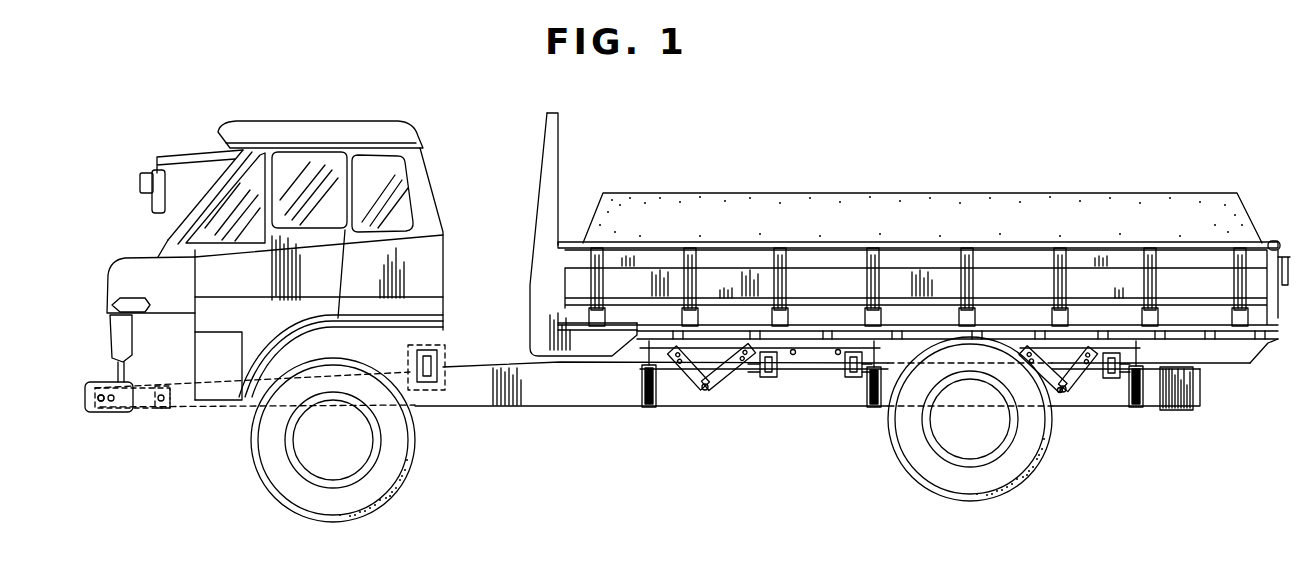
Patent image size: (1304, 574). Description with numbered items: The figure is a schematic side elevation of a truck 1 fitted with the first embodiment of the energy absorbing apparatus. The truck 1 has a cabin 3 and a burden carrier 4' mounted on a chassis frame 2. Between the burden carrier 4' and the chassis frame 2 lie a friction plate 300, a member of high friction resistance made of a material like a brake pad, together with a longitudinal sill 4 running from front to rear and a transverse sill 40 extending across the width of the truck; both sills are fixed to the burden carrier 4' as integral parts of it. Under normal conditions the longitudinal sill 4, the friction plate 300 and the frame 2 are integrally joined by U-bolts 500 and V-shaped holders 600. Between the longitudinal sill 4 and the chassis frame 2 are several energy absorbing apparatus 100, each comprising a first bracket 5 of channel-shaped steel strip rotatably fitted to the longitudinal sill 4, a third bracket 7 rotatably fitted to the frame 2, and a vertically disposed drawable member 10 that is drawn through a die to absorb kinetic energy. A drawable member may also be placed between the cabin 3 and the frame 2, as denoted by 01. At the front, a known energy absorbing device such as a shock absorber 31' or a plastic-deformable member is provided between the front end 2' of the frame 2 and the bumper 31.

The truck 1 is at (674, 291).
The chassis frame 2 is at (672, 388).
The front end of the frame 2' is at (168, 424).
The cabin 3 is at (332, 123).
The longitudinal sill 4 is at (910, 261).
The burden carrier 4' is at (922, 214).
The first bracket 5 is at (793, 355).
The third bracket 7 is at (757, 370).
The drawable member 10 is at (770, 378).
The drawable member between cabin and frame 01 is at (432, 385).
The bumper 31 is at (114, 373).
The shock absorber 31' is at (113, 429).
The transverse sill 40 is at (1185, 345).
The energy absorbing apparatus 100 is at (760, 385).
The friction plate 300 is at (1225, 368).
The U-bolts 500 is at (645, 350).
The V-shaped holders 600 is at (695, 388).